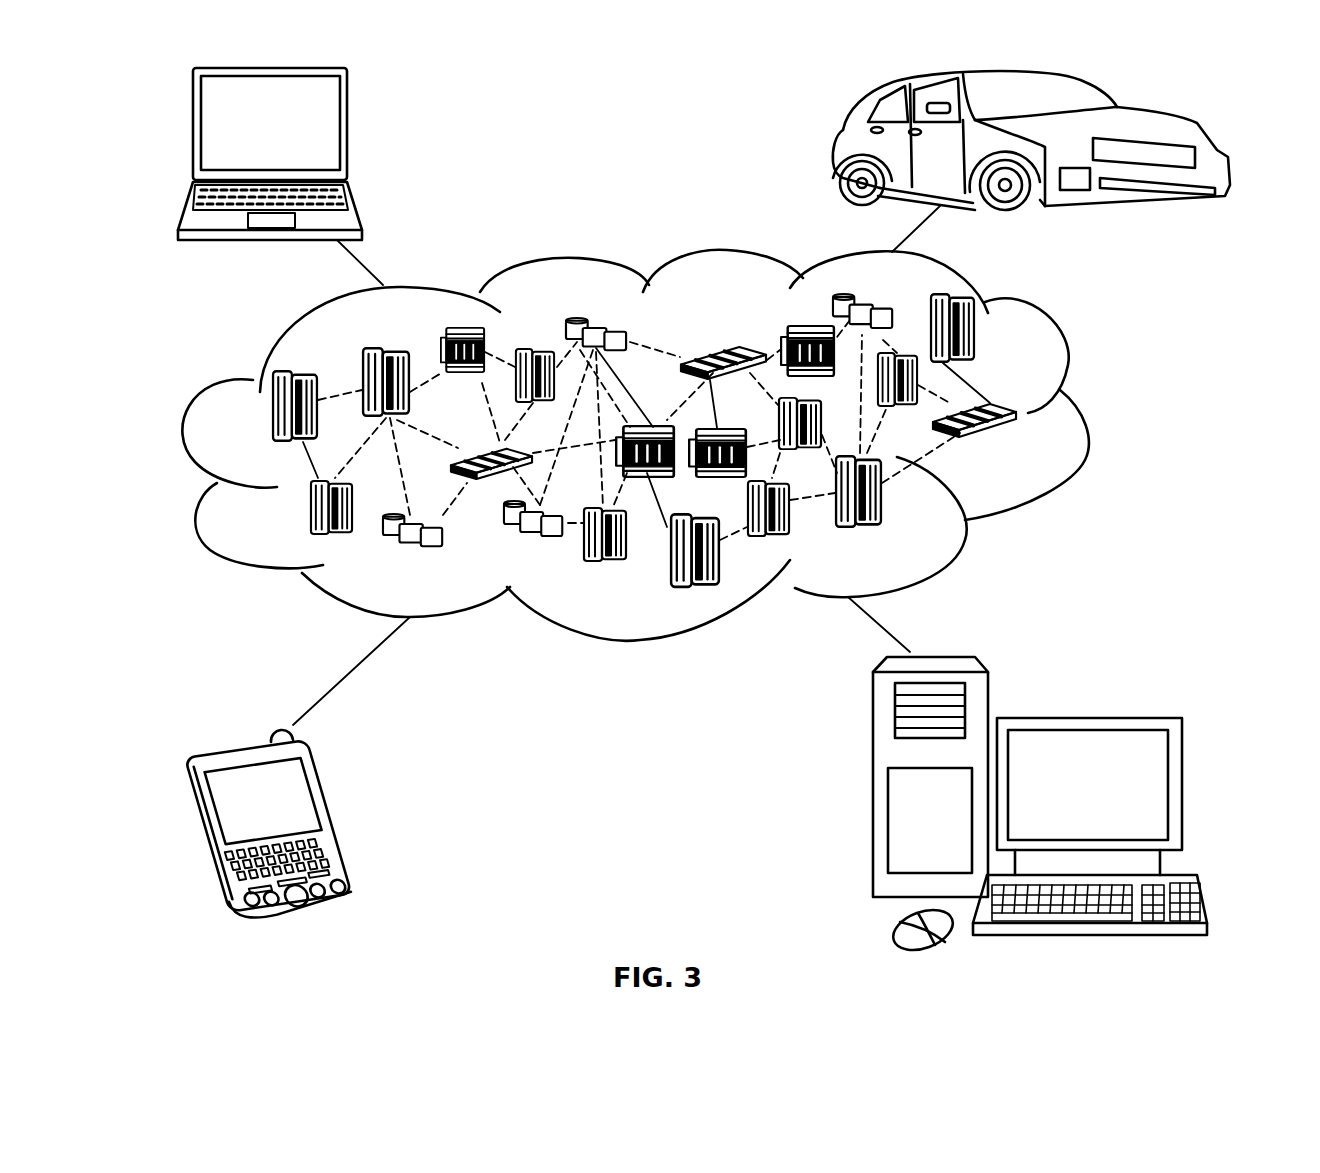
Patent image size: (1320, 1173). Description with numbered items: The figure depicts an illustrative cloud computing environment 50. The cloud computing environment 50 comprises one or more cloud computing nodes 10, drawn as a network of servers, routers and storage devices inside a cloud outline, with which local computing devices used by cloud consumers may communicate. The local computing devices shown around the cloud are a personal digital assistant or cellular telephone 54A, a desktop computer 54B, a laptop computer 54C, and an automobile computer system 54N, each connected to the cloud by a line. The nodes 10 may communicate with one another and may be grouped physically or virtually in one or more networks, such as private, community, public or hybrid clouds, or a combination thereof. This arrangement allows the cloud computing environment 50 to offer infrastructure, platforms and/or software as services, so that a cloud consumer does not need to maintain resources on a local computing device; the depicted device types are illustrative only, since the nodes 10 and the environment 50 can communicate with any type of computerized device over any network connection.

The cloud computing nodes 10 is at (1032, 450).
The cloud computing environment 50 is at (1080, 418).
The personal digital assistant (PDA) or cellular telephone 54A is at (337, 816).
The desktop computer 54B is at (1088, 717).
The laptop computer 54C is at (349, 133).
The automobile computer system 54N is at (842, 152).